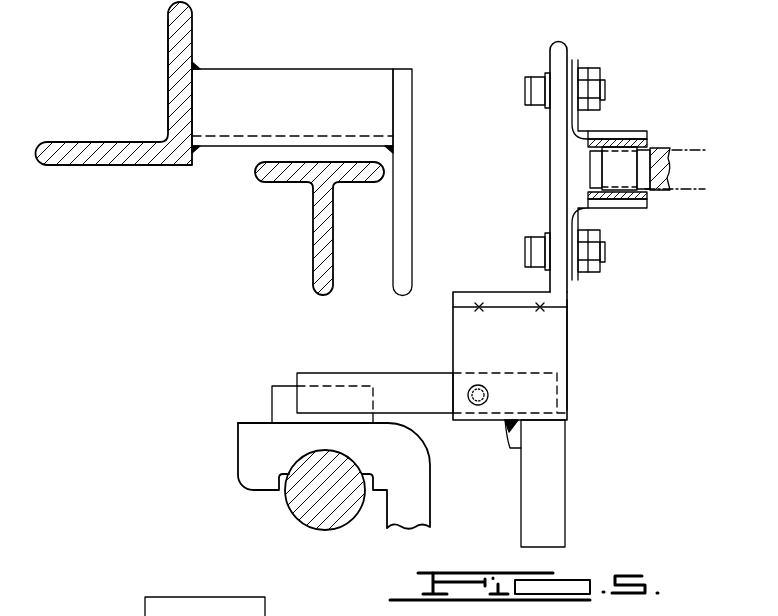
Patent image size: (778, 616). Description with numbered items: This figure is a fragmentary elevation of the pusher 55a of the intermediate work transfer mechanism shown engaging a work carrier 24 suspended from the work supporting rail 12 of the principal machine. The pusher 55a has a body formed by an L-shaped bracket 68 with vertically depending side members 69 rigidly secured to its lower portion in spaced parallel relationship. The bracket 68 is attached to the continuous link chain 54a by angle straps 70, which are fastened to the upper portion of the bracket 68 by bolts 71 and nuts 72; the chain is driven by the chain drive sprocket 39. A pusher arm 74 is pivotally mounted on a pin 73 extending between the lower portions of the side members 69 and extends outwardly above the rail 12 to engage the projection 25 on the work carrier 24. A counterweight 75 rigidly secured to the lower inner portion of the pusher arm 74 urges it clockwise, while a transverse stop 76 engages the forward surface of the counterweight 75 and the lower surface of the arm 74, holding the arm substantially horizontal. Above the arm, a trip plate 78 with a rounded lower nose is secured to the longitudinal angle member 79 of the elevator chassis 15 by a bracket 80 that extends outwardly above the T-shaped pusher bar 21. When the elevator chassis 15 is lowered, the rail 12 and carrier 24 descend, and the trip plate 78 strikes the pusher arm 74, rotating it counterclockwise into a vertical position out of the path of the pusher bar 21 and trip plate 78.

The work supporting rail 12 is at (326, 520).
The elevator chassis 15 is at (152, 175).
The pusher bar 21 is at (318, 223).
The work carrier 24 is at (252, 460).
The projection 25 is at (272, 396).
The chain drive sprocket 39 is at (668, 160).
The continuous link chain 54a is at (618, 158).
The pusher 55a is at (569, 351).
The L-shaped bracket 68 is at (560, 48).
The vertically depending side member 69 is at (552, 333).
The angle strap 70 is at (588, 135).
The bolt 71 is at (606, 90).
The nut 72 is at (590, 78).
The pin 73 is at (481, 386).
The pusher arm 74 is at (393, 378).
The counterweight 75 is at (557, 478).
The transverse stop 76 is at (512, 445).
The trip plate 78 is at (414, 257).
The longitudinal angle member 79 is at (195, 34).
The bracket 80 is at (310, 80).